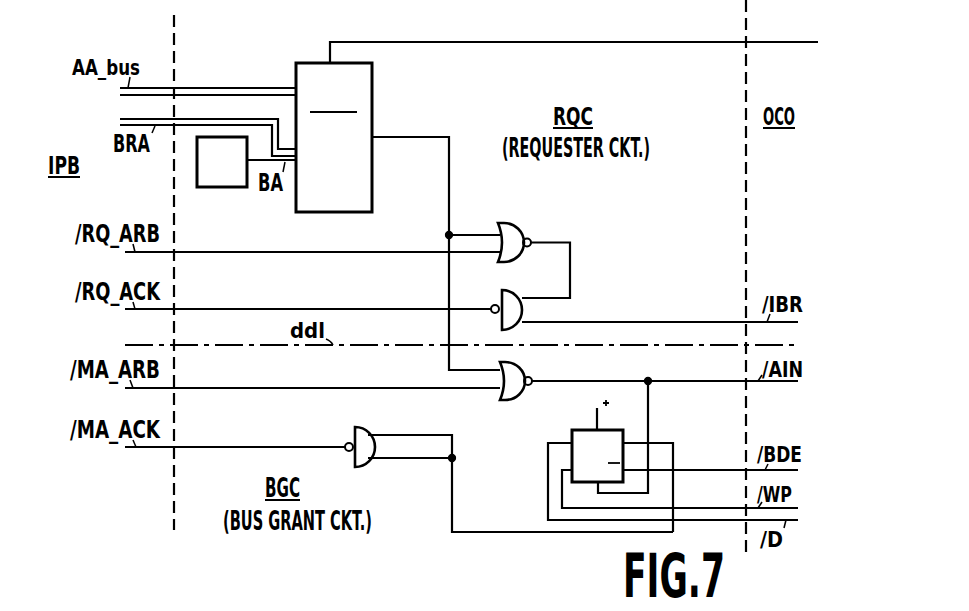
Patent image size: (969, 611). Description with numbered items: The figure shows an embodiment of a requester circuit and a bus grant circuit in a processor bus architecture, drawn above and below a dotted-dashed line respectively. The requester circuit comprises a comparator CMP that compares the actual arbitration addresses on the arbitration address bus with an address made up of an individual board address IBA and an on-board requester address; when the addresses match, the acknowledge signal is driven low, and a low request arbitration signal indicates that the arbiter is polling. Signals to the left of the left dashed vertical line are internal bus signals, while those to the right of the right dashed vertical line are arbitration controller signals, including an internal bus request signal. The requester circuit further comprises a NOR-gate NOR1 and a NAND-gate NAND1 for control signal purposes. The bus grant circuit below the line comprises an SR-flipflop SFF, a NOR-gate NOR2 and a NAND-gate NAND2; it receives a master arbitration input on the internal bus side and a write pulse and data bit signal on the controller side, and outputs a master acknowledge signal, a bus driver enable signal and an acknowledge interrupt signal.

The comparator CMP is at (373, 82).
The individual board address IBA is at (221, 187).
The NOR-gate NOR1 is at (505, 222).
The NAND-gate NAND1 is at (502, 300).
The NOR-gate NOR2 is at (516, 366).
The NAND-gate NAND2 is at (360, 428).
The SR-flipflop SFF is at (581, 430).